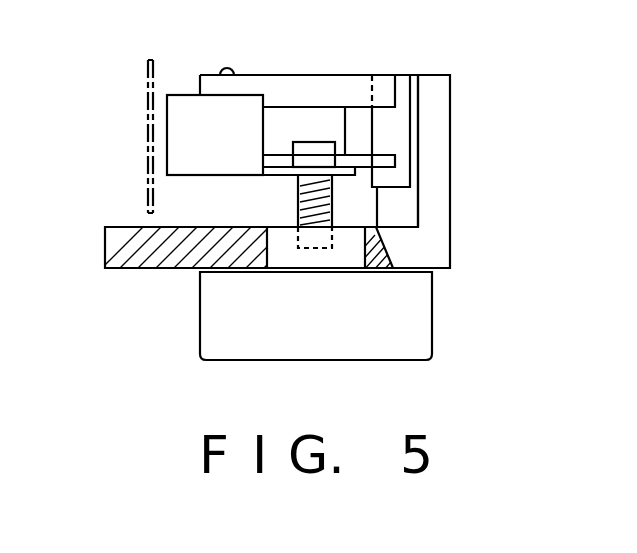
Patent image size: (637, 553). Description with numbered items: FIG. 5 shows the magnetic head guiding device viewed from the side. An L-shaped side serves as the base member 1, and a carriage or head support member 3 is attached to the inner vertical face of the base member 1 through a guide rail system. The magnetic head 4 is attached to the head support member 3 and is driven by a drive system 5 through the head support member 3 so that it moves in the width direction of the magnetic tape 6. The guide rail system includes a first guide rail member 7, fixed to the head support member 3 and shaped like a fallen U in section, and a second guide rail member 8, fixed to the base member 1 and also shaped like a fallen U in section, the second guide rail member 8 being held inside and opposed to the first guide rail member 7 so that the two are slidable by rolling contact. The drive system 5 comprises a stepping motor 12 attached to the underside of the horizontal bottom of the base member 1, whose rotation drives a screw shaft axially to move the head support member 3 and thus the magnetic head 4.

The base member 1 is at (452, 223).
The head support member 3 is at (318, 75).
The magnetic head 4 is at (185, 95).
The drive system 5 is at (262, 208).
The magnetic tape 6 is at (148, 147).
The first guide rail member 7 is at (405, 120).
The second guide rail member 8 is at (410, 198).
The stepping motor 12 is at (432, 318).